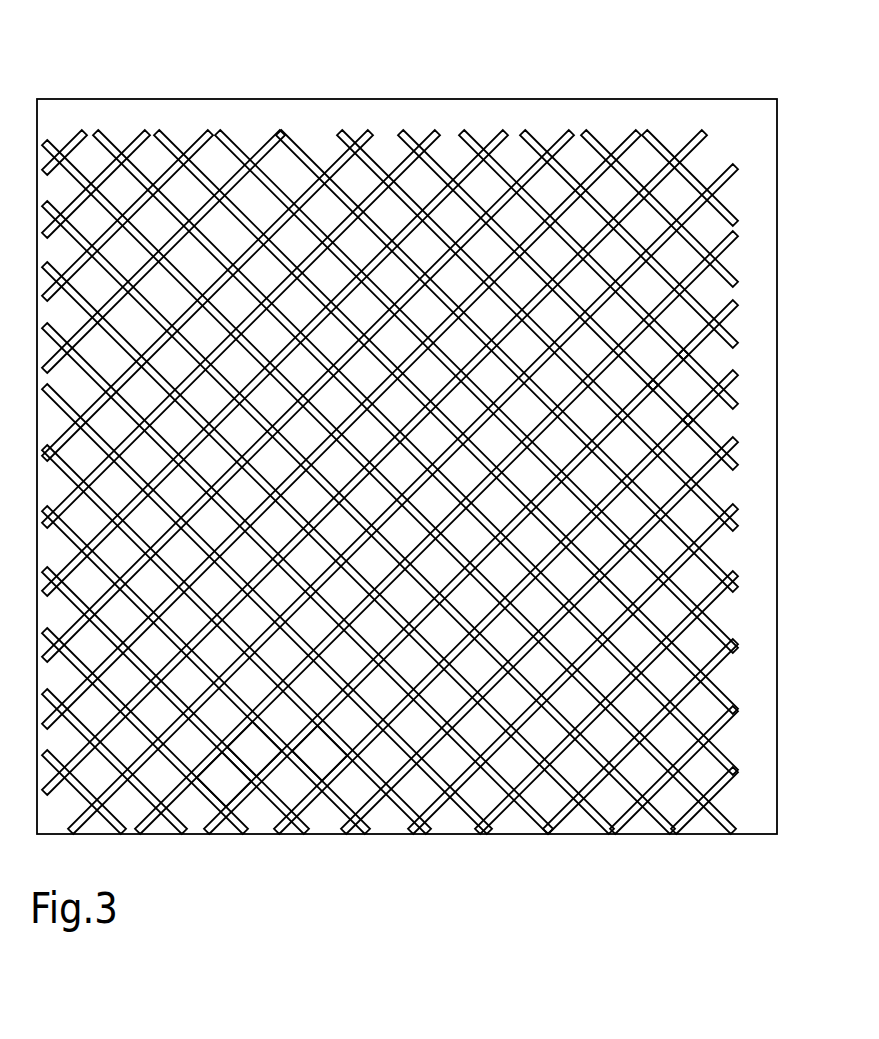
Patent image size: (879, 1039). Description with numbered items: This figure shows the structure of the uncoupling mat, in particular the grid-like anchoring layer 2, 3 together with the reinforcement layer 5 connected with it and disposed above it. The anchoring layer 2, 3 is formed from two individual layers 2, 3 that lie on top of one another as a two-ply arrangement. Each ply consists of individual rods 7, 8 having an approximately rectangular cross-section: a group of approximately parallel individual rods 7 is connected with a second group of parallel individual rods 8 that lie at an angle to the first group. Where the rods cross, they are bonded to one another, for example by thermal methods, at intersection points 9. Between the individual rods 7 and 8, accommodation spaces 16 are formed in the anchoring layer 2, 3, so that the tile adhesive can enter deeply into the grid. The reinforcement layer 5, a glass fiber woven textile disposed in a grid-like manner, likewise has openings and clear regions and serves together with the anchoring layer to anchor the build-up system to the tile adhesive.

The individual layer of the anchoring layer 2 is at (611, 178).
The individual layer of the anchoring layer 3 is at (607, 185).
The reinforcement layer 5 is at (758, 168).
The individual rods 7 is at (555, 690).
The individual rods 8 is at (690, 733).
The intersection points 9 is at (682, 437).
The accommodation spaces 16 is at (322, 755).